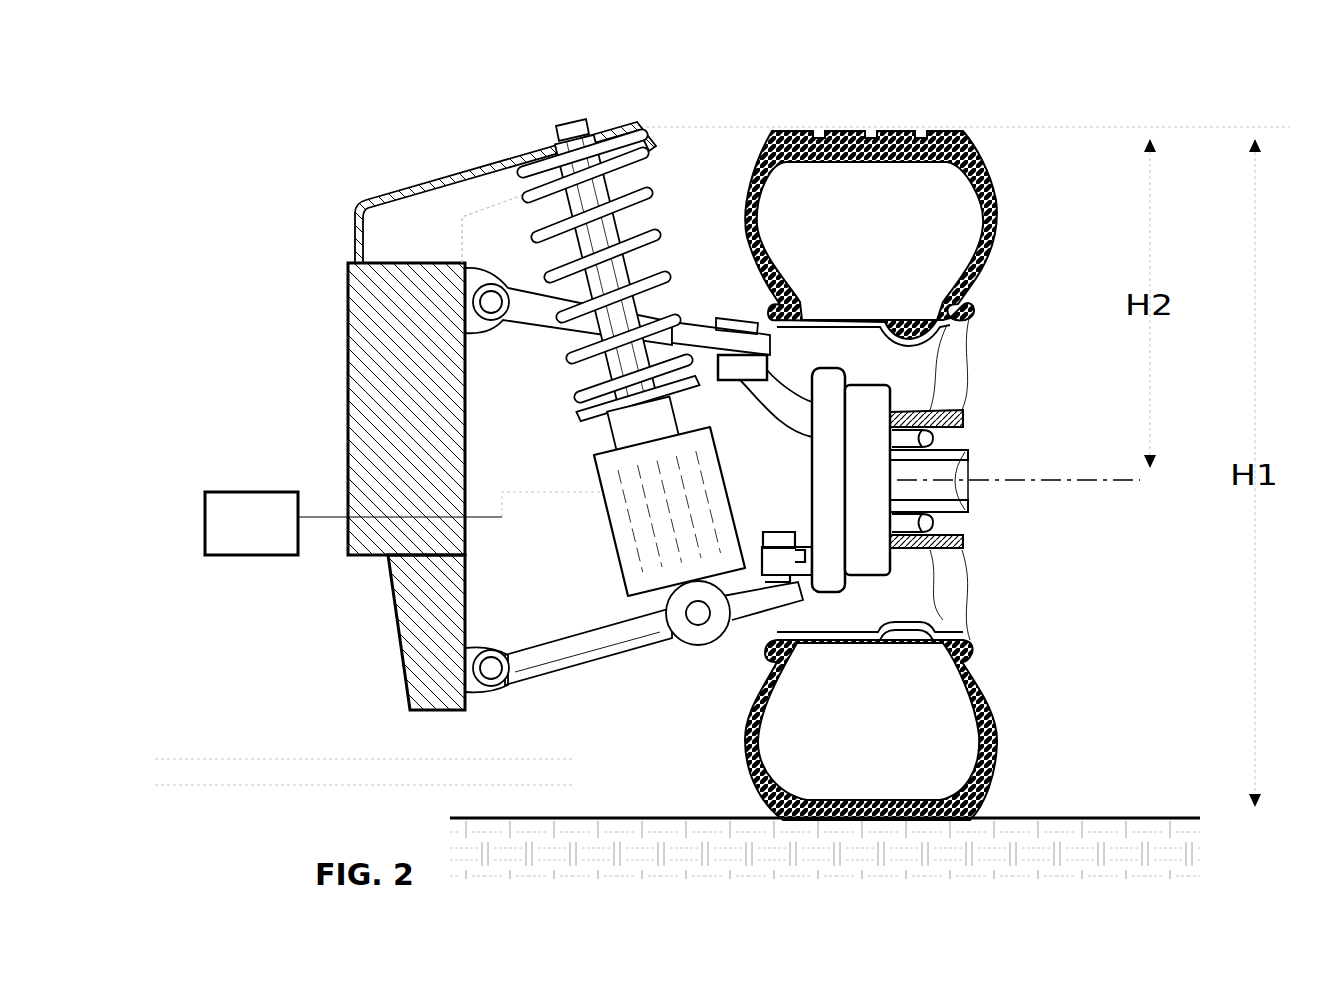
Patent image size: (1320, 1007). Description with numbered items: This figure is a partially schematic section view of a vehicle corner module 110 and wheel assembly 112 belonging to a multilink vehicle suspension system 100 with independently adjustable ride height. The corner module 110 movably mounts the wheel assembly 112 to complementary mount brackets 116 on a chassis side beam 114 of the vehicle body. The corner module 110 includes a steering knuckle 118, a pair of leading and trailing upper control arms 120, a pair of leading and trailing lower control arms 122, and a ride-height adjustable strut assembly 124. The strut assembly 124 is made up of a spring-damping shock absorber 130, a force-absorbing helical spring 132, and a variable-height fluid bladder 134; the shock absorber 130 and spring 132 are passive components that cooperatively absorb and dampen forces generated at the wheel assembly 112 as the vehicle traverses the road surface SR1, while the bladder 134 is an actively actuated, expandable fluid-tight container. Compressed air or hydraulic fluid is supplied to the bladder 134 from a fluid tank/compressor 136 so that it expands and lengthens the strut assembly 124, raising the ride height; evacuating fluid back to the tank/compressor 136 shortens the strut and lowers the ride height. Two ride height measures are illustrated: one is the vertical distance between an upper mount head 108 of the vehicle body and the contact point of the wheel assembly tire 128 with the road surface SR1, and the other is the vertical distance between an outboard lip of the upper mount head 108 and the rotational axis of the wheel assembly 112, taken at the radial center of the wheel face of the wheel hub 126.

The multilink vehicle suspension system 100 is at (405, 97).
The upper mount head 108 is at (535, 150).
The vehicle corner module 110 is at (737, 155).
The wheel assembly 112 is at (997, 105).
The chassis side beam 114 is at (348, 285).
The mount brackets 116 is at (490, 335).
The steering knuckle 118 is at (828, 597).
The upper control arms 120 is at (716, 333).
The lower control arms 122 is at (602, 640).
The ride-height adjustable strut assembly 124 is at (483, 243).
The wheel hub 126 is at (967, 488).
The wheel assembly tire 128 is at (990, 715).
The spring-damping shock absorber 130 is at (628, 165).
The helical spring 132 is at (650, 230).
The variable-height fluid bladder 134 is at (612, 550).
The fluid tank/compressor 136 is at (205, 500).
The road surface SR1 is at (632, 818).